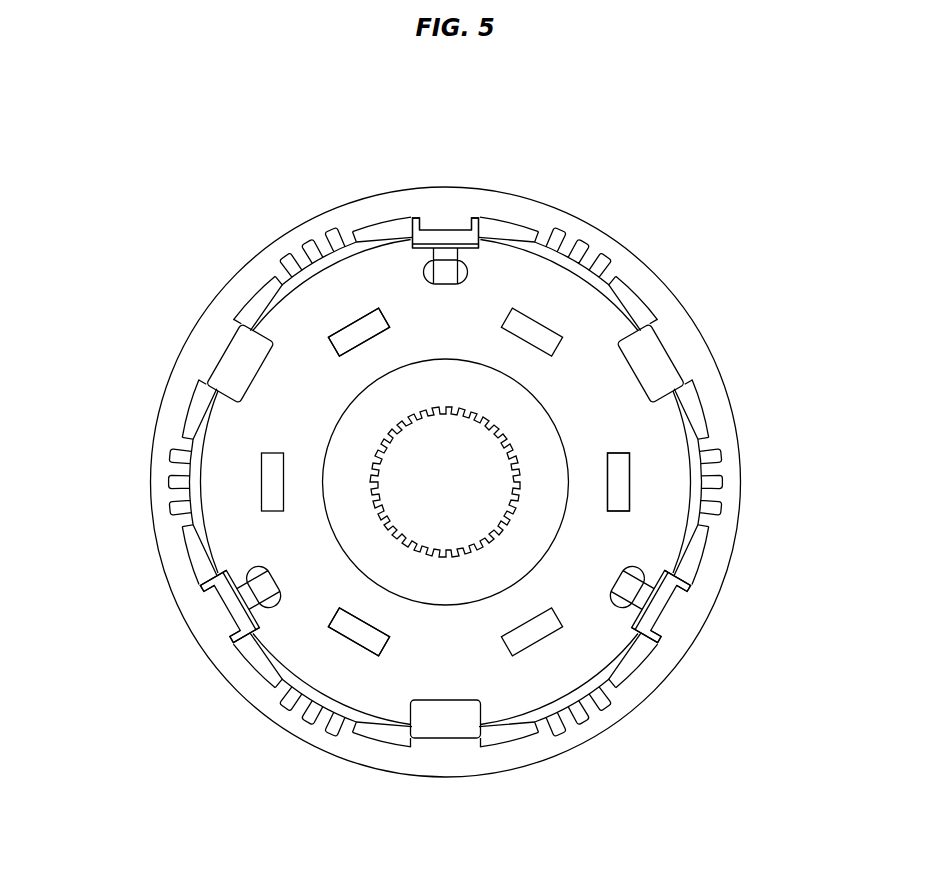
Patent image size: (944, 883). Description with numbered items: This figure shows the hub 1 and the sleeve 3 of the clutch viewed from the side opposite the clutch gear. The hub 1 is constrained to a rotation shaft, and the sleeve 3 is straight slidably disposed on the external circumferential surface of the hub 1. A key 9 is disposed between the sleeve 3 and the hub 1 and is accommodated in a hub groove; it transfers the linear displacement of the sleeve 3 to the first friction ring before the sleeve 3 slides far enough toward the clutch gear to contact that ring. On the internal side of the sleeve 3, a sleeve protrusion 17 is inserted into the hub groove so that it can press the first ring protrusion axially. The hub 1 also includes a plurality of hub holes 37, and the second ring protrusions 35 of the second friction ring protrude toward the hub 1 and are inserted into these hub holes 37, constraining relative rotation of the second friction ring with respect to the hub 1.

The hub 1 is at (268, 430).
The sleeve 3 is at (248, 280).
The key 9 is at (481, 236).
The sleeve protrusion 17 is at (459, 227).
The second ring protrusions 35 is at (368, 324).
The hub holes 37 is at (347, 350).